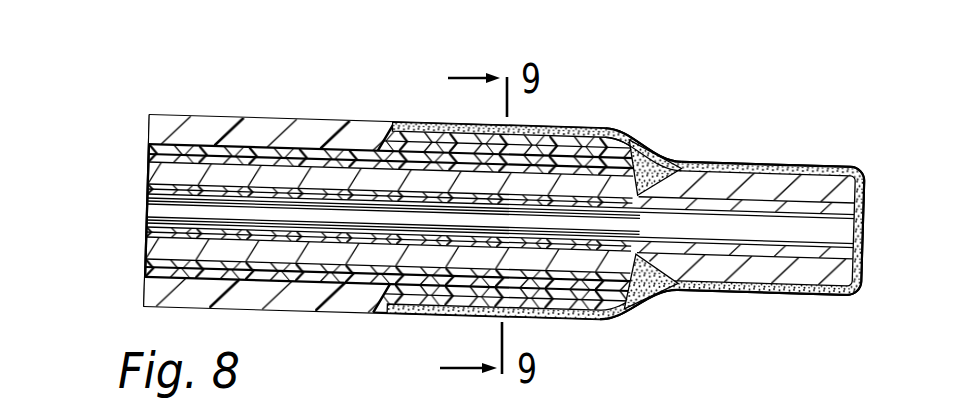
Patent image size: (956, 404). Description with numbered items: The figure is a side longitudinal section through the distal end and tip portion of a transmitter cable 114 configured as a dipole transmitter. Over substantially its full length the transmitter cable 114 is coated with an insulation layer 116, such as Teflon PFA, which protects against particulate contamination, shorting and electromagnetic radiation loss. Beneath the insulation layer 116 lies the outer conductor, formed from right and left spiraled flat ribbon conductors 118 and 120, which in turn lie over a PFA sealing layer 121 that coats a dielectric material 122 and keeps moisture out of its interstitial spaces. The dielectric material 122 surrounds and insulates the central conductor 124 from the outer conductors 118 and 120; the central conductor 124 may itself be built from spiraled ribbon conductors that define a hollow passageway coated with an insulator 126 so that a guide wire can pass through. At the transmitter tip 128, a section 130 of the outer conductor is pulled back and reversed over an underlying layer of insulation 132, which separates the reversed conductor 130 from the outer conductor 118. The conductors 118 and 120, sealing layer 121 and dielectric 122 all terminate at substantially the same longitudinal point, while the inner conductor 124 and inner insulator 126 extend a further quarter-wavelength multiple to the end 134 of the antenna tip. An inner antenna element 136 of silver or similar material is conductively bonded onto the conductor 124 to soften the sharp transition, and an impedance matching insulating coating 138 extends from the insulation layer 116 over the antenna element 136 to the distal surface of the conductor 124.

The transmitter cable 114 is at (338, 92).
The insulation layer 116 is at (148, 115).
The right spiraled flat ribbon conductor 118 is at (148, 143).
The left spiraled flat ribbon conductor 120 is at (148, 157).
The PFA sealing layer 121 is at (148, 170).
The dielectric material 122 is at (147, 187).
The central conductor 124 is at (147, 200).
The insulator 126 is at (147, 213).
The transmitter tip 128 is at (684, 64).
The reversed outer conductor section 130 is at (593, 127).
The underlying layer of insulation 132 is at (630, 137).
The end of the antenna tip 134 is at (857, 140).
The inner antenna element 136 is at (787, 268).
The impedance matching insulating coating 138 is at (660, 156).